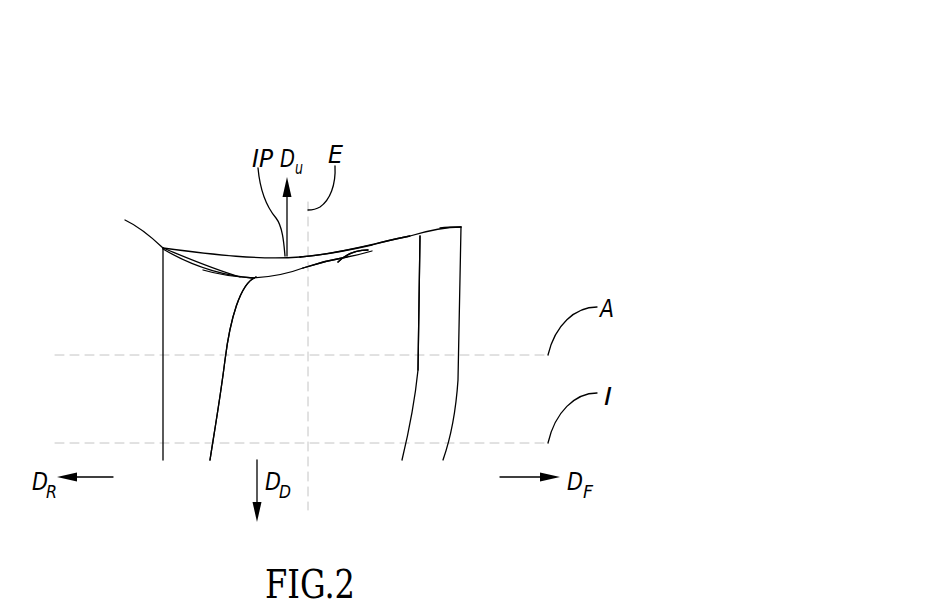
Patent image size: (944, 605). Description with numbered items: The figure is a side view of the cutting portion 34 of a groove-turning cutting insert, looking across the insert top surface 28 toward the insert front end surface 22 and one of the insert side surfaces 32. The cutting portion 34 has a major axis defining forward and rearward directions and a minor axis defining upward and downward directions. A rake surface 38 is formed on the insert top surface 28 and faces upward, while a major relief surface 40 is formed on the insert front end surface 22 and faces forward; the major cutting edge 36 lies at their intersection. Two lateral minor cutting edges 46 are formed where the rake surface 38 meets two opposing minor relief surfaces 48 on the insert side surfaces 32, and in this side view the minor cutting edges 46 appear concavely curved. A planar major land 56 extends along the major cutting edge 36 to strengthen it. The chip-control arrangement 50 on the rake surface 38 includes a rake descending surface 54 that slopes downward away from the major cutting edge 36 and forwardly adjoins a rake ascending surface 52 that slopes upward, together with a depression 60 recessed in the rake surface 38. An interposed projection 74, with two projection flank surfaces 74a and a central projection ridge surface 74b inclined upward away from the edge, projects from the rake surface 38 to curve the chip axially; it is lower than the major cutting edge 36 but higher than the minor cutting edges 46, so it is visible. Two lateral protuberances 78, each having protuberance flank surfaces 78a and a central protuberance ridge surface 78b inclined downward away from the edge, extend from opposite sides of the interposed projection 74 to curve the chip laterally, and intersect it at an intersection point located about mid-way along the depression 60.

The insert front end surface 22 is at (461, 312).
The insert top surface 28 is at (137, 228).
The insert side surface 32 is at (183, 384).
The cutting portion 34 is at (499, 139).
The major cutting edge 36 is at (462, 226).
The rake surface 38 is at (257, 214).
The major relief surface 40 is at (495, 333).
The minor cutting edge 46 is at (356, 253).
The minor relief surface 48 is at (281, 340).
The chip-control arrangement 50 is at (353, 223).
The rake ascending surface 52 is at (182, 285).
The rake descending surface 54 is at (362, 250).
The major land 56 is at (461, 227).
The depression 60 is at (331, 228).
The interposed projection 74 is at (208, 232).
The projection flank surface 74a is at (218, 258).
The central projection ridge surface 74b is at (233, 255).
The lateral protuberance 78 is at (319, 283).
The protuberance flank surface 78a is at (290, 267).
The central protuberance ridge surface 78b is at (290, 255).